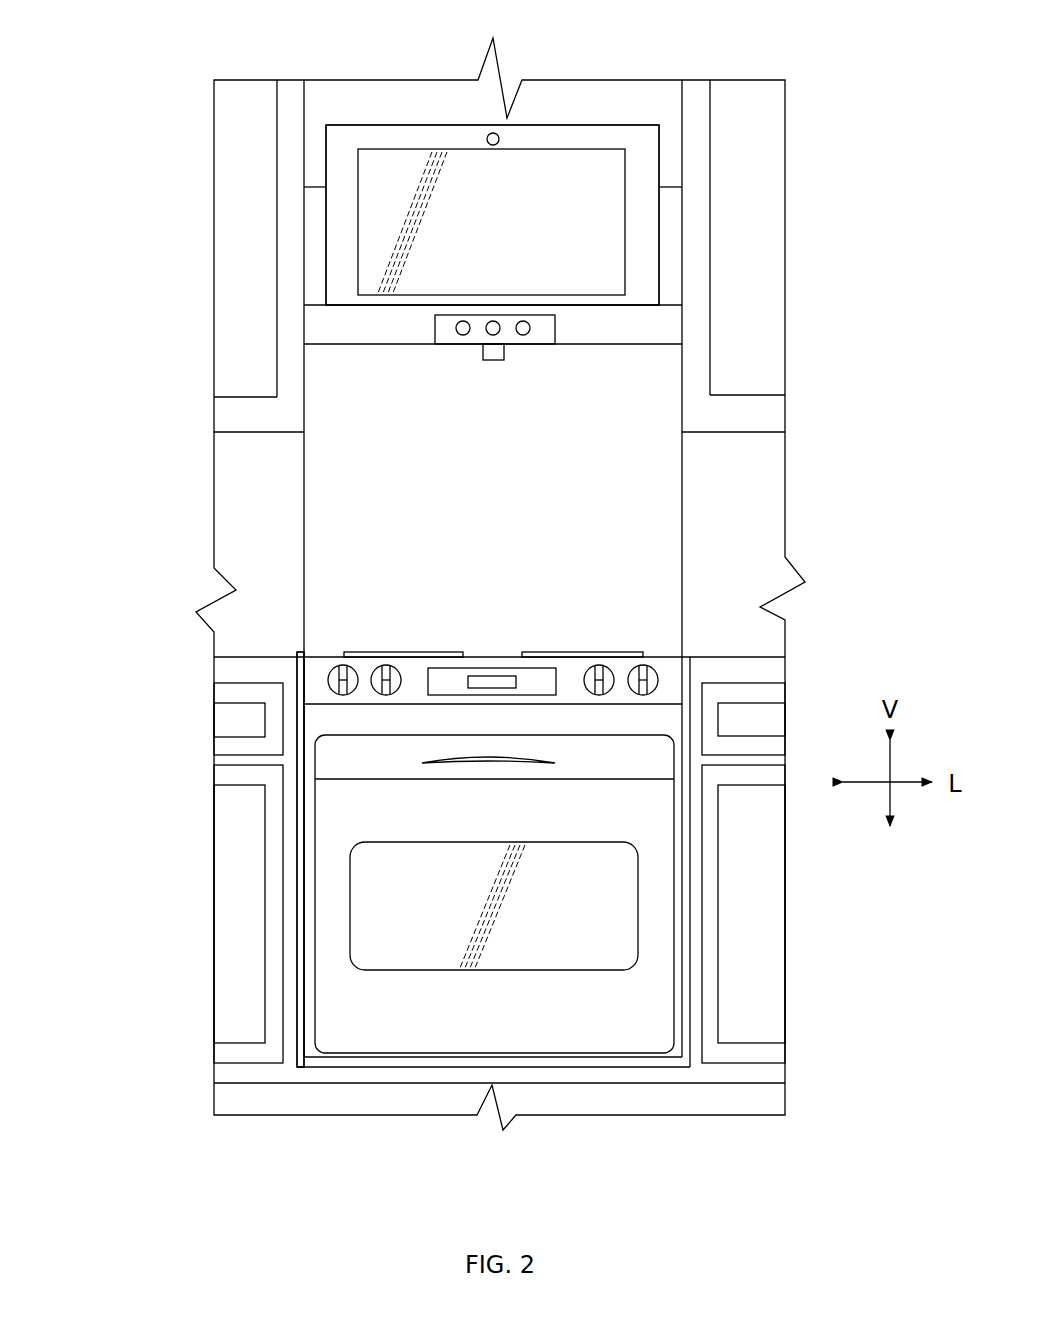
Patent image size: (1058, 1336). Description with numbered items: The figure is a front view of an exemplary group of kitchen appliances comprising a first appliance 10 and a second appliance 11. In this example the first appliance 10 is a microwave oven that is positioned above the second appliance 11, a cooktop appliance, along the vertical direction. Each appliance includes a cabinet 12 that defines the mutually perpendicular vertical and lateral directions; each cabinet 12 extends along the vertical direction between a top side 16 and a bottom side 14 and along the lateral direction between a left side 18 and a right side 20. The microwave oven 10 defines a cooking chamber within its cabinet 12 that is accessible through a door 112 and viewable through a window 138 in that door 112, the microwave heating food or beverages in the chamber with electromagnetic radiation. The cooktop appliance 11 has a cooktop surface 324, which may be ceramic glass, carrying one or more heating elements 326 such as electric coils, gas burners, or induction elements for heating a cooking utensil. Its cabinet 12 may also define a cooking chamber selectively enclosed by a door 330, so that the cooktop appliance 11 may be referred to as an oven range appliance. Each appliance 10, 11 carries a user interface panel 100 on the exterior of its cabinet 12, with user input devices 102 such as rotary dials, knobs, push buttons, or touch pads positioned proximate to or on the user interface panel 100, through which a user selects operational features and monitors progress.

The first appliance 10 is at (160, 58).
The second appliance 11 is at (290, 853).
The cabinet 12 is at (660, 330).
The bottom side 14 is at (580, 345).
The top side 16 is at (408, 122).
The left side 18 is at (302, 267).
The right side 20 is at (684, 272).
The user interface panel 100 is at (663, 666).
The user input device 102 is at (655, 678).
The door 112 is at (640, 140).
The window 138 is at (373, 233).
The cooktop surface 324 is at (317, 652).
The heating elements 326 is at (435, 655).
The door 330 is at (655, 925).